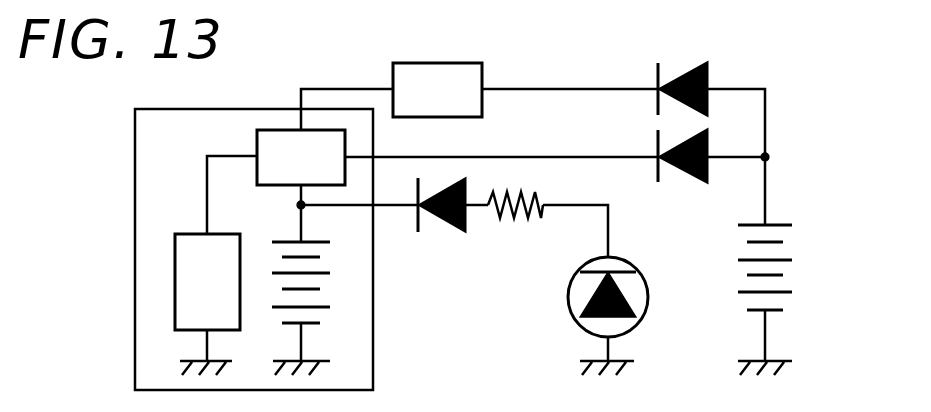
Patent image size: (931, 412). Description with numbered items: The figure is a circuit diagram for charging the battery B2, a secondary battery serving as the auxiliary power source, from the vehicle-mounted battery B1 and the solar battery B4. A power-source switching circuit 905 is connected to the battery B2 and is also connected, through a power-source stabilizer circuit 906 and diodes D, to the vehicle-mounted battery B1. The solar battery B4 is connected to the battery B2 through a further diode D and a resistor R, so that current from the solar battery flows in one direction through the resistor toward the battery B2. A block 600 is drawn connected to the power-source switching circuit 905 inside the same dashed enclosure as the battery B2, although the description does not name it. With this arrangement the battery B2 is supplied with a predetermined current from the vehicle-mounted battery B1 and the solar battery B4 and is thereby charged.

The power-source switching circuit 905 is at (257, 141).
The power-source stabilizer circuit 906 is at (467, 82).
The load block 600 is at (188, 234).
The battery B2 is at (330, 294).
The vehicle-mounted battery B1 is at (731, 277).
The solar battery B4 is at (568, 297).
The diode D is at (712, 72).
The resistor R is at (517, 213).